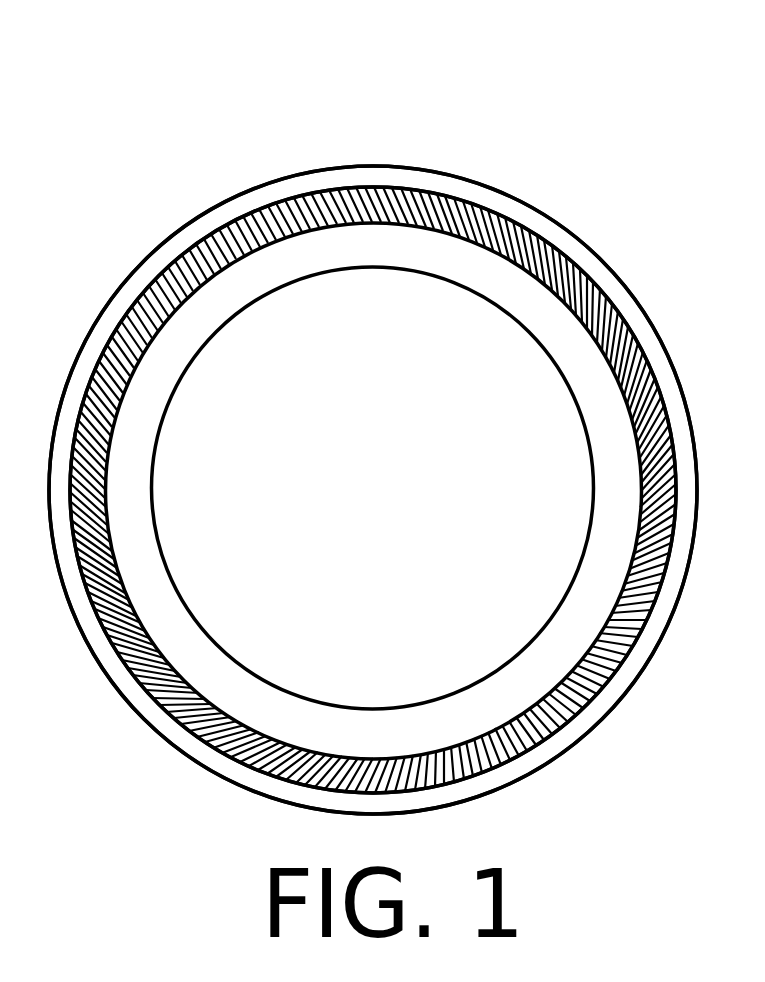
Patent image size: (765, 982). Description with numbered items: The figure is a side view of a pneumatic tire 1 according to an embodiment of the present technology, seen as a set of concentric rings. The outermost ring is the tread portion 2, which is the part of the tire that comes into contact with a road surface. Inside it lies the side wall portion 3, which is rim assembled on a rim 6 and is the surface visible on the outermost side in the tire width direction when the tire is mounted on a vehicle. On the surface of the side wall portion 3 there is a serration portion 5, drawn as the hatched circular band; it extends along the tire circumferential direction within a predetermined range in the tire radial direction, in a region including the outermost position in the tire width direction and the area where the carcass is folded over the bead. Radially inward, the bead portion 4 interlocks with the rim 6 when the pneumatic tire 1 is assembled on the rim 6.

The pneumatic tire 1 is at (623, 83).
The tread portion 2 is at (587, 248).
The side wall portion 3 is at (517, 224).
The bead portion 4 is at (545, 345).
The serration portion 5 is at (422, 192).
The rim 6 is at (530, 408).